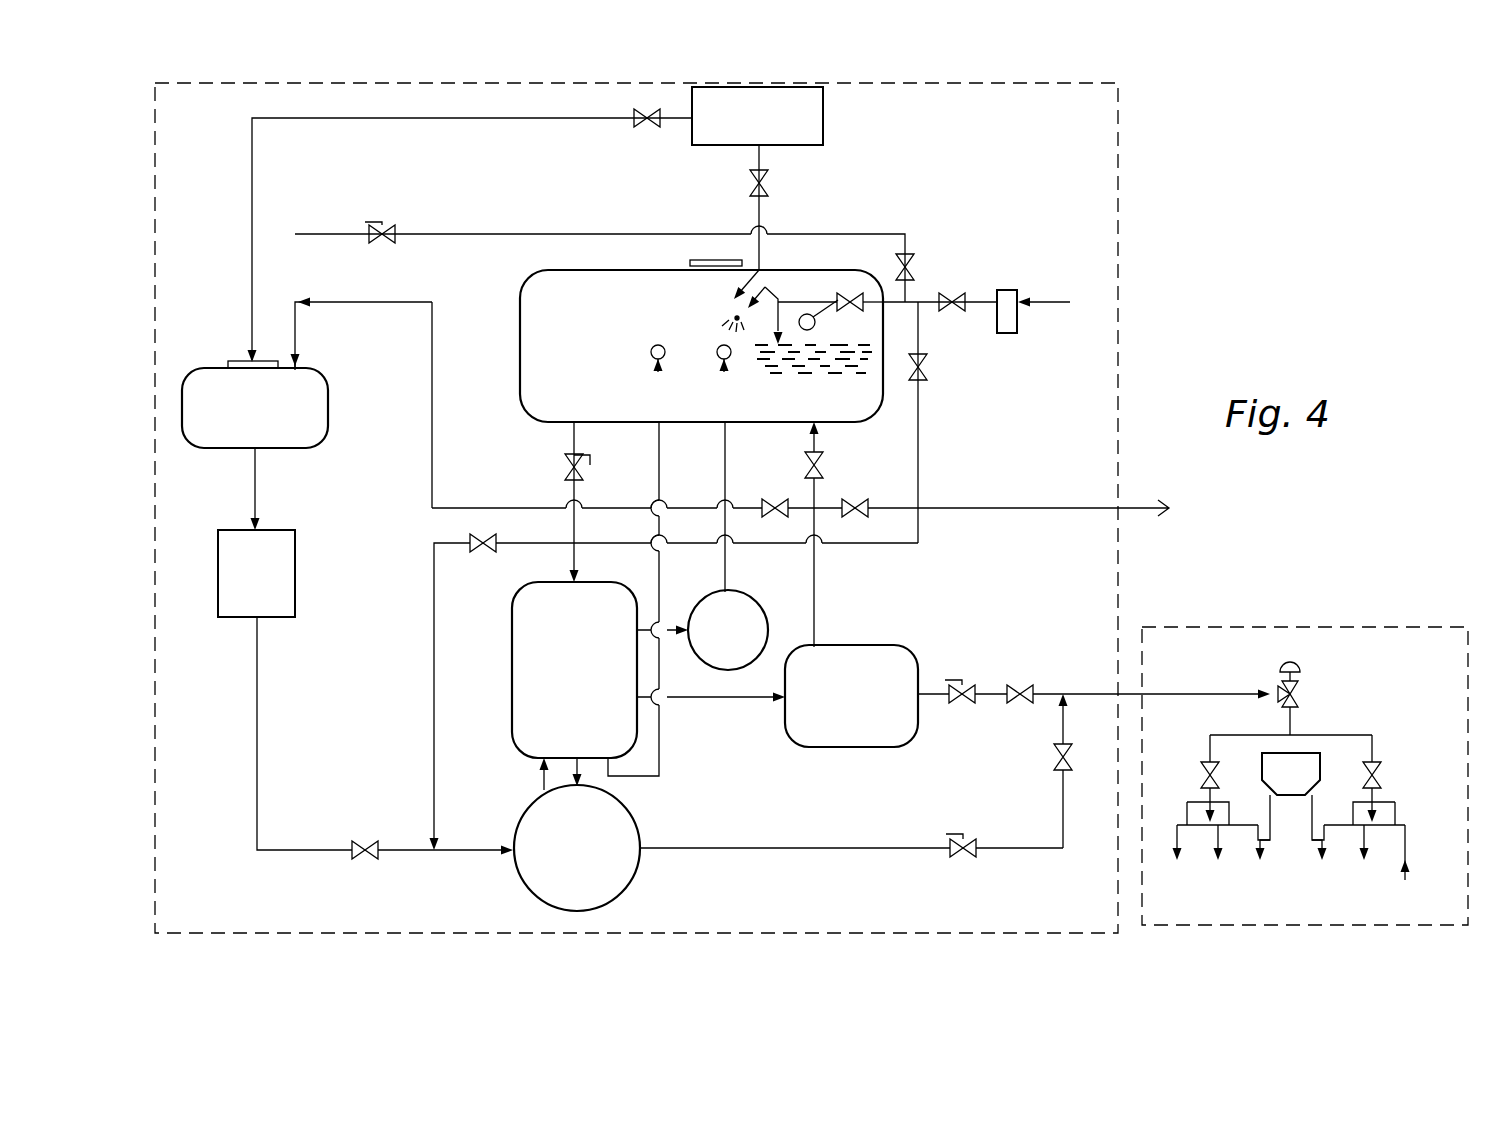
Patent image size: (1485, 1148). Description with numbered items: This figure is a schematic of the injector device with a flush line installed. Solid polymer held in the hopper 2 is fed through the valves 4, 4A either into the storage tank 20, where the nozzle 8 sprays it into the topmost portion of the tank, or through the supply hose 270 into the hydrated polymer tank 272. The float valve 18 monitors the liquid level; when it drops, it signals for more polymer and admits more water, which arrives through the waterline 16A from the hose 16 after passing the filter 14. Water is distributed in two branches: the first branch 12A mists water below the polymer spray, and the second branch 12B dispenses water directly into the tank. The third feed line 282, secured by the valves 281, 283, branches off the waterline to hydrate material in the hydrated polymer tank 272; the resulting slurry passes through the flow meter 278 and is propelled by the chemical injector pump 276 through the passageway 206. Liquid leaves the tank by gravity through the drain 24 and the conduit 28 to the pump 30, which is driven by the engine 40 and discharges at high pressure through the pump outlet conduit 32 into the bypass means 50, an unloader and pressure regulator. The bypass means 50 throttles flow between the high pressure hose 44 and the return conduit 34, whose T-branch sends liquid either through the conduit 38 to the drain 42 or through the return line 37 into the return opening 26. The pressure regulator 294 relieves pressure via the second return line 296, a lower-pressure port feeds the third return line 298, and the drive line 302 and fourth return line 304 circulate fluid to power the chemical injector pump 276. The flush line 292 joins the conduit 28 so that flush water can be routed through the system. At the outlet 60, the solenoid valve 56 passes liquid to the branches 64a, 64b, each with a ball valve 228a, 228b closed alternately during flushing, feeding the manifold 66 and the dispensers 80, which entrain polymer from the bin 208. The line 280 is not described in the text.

The hopper 2 is at (826, 116).
The valve 4 is at (768, 187).
The valve 4A is at (636, 126).
The nozzle 8 is at (733, 290).
The first branch 12A is at (748, 294).
The second branch 12B is at (784, 300).
The filter 14 is at (1003, 336).
The hose 16 is at (1068, 312).
The waterline 16A is at (909, 300).
The float valve 18 is at (845, 311).
The storage tank 20 is at (568, 398).
The drain 24 is at (576, 432).
The return opening 26 is at (820, 428).
The conduit 28 is at (569, 440).
The pump 30 is at (574, 670).
The engine 40 is at (535, 613).
The pump outlet conduit 32 is at (688, 704).
The return conduit 34 is at (817, 586).
The return line 37 is at (826, 458).
The conduit 38 is at (1010, 506).
The drain 42 is at (1167, 498).
The high pressure hose 44 is at (1050, 692).
The bypass means 50 is at (848, 646).
The solenoid valve 56 is at (1298, 692).
The outlet 60 is at (1305, 580).
The branch 64a is at (1198, 830).
The branch 64b is at (1384, 830).
The manifold 66 is at (1408, 828).
The dispensers 80 is at (1407, 878).
The passageway 206 is at (858, 852).
The bin 208 is at (1274, 785).
The ball valve 228a is at (1198, 770).
The ball valve 228b is at (1384, 770).
The supply hose 270 is at (251, 202).
The hydrated polymer tank 272 is at (317, 372).
The chemical injector pump 276 is at (636, 878).
The flow meter 278 is at (297, 565).
The water line 280 is at (435, 352).
The valve 281 is at (376, 222).
The third feed line 282 is at (840, 232).
The valve 283 is at (913, 256).
The flush line 292 is at (921, 350).
The pressure regulator 294 is at (752, 600).
The second return line 296 is at (728, 460).
The third return line 298 is at (662, 584).
The drive line 302 is at (590, 770).
The fourth return line 304 is at (541, 785).